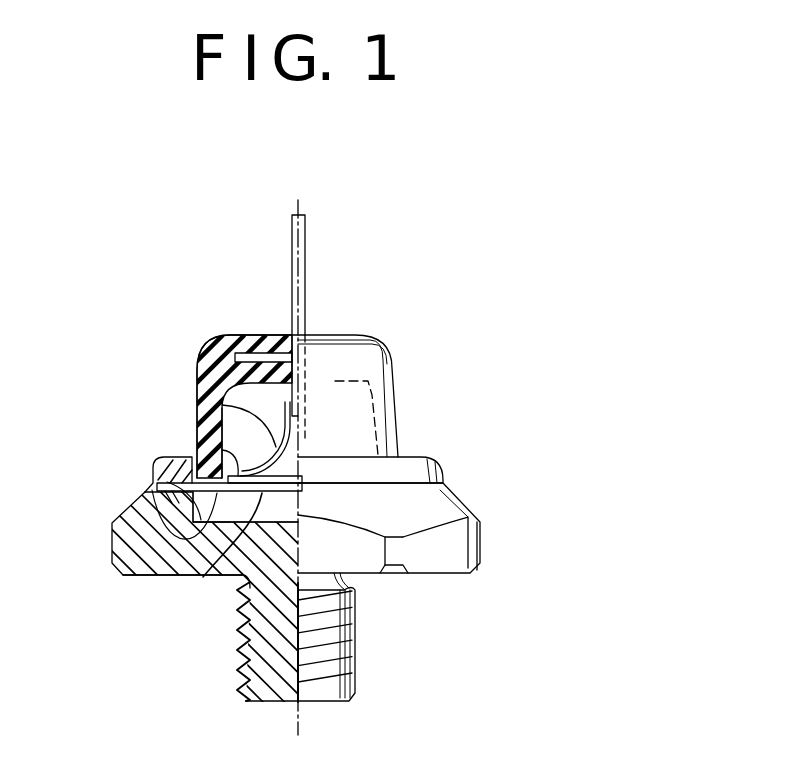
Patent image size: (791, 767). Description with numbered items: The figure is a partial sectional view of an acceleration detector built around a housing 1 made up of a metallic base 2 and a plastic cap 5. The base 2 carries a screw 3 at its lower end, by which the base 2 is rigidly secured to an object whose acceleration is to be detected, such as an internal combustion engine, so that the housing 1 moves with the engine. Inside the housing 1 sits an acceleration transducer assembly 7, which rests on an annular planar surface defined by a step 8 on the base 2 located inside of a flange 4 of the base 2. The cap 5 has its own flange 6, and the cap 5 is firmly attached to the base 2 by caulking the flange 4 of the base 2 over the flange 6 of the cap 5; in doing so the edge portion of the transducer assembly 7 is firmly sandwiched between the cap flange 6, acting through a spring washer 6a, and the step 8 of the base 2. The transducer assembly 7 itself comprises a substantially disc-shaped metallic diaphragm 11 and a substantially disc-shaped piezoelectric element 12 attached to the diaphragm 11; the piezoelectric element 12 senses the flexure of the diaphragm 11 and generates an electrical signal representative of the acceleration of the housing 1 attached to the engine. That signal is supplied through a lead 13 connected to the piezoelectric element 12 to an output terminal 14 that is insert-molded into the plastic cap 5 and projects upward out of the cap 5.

The housing 1 is at (378, 379).
The metallic base 2 is at (170, 574).
The screw 3 is at (357, 660).
The flange 4 is at (158, 458).
The plastic cap 5 is at (201, 342).
The flange 6 is at (155, 479).
The spring washer 6a is at (157, 489).
The acceleration transducer assembly 7 is at (204, 573).
The step 8 is at (147, 497).
The metallic diaphragm 11 is at (197, 523).
The piezoelectric element 12 is at (197, 445).
The lead 13 is at (197, 407).
The output terminal 14 is at (306, 268).